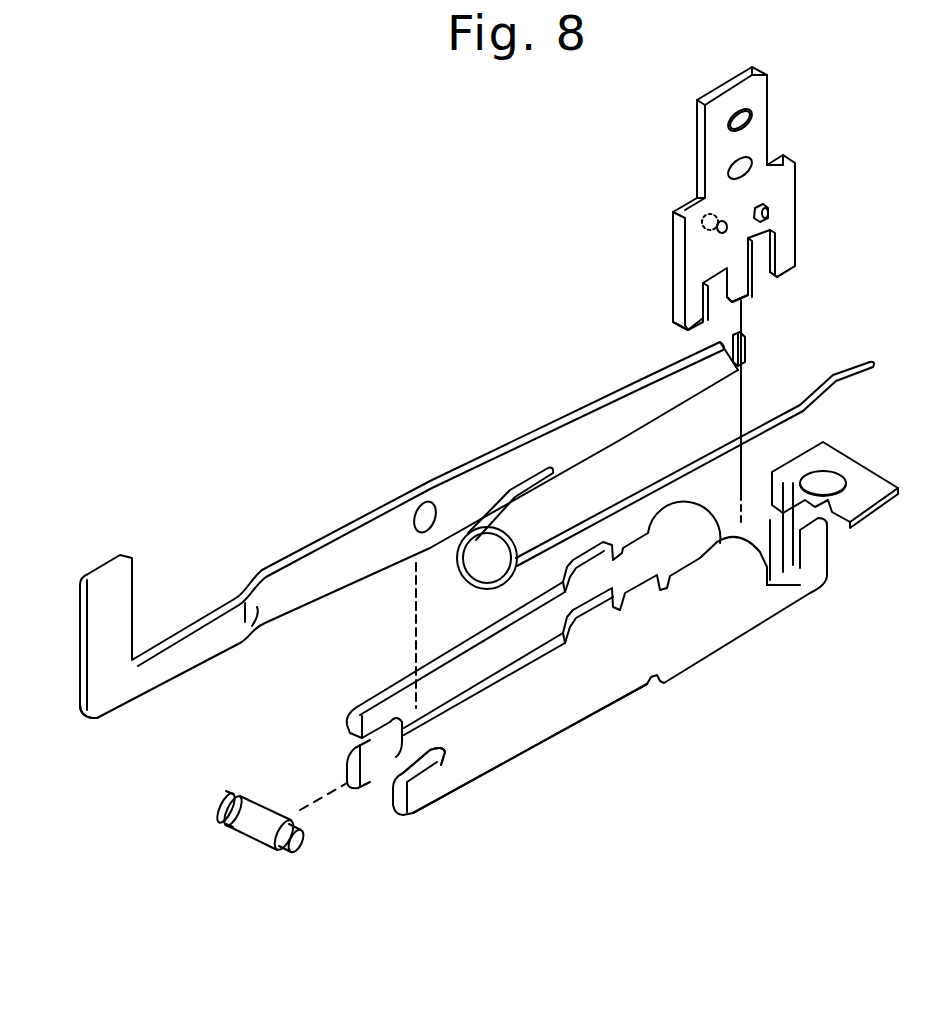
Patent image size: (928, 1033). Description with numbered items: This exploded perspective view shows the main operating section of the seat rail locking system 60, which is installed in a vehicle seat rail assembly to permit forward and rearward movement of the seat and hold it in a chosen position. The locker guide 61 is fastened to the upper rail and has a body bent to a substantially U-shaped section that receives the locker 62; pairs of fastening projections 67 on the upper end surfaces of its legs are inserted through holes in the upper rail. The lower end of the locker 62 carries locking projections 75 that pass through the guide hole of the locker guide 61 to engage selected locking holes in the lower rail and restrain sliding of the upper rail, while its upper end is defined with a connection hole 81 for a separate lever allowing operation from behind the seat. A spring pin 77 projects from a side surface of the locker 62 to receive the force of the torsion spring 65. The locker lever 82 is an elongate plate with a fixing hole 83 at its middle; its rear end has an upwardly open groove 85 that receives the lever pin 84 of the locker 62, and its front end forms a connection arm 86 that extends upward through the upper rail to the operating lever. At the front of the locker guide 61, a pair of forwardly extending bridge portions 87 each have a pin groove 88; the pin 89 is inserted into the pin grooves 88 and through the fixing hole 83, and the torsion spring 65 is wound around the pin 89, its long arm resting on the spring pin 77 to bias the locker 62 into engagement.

The seat rail locking system 60 is at (493, 350).
The locker guide 61 is at (743, 638).
The locker 62 is at (810, 220).
The torsion spring 65 is at (807, 408).
The fastening projections 67 is at (637, 590).
The locking projections 75 is at (672, 315).
The spring pin 77 is at (768, 222).
The connection hole 81 is at (745, 122).
The locker lever 82 is at (356, 516).
The fixing hole 83 is at (438, 510).
The lever pin 84 is at (715, 226).
The groove 85 is at (746, 364).
The connection arm 86 is at (115, 583).
The bridge portions 87 is at (568, 698).
The pin grooves 88 is at (420, 762).
The pin 89 is at (253, 824).